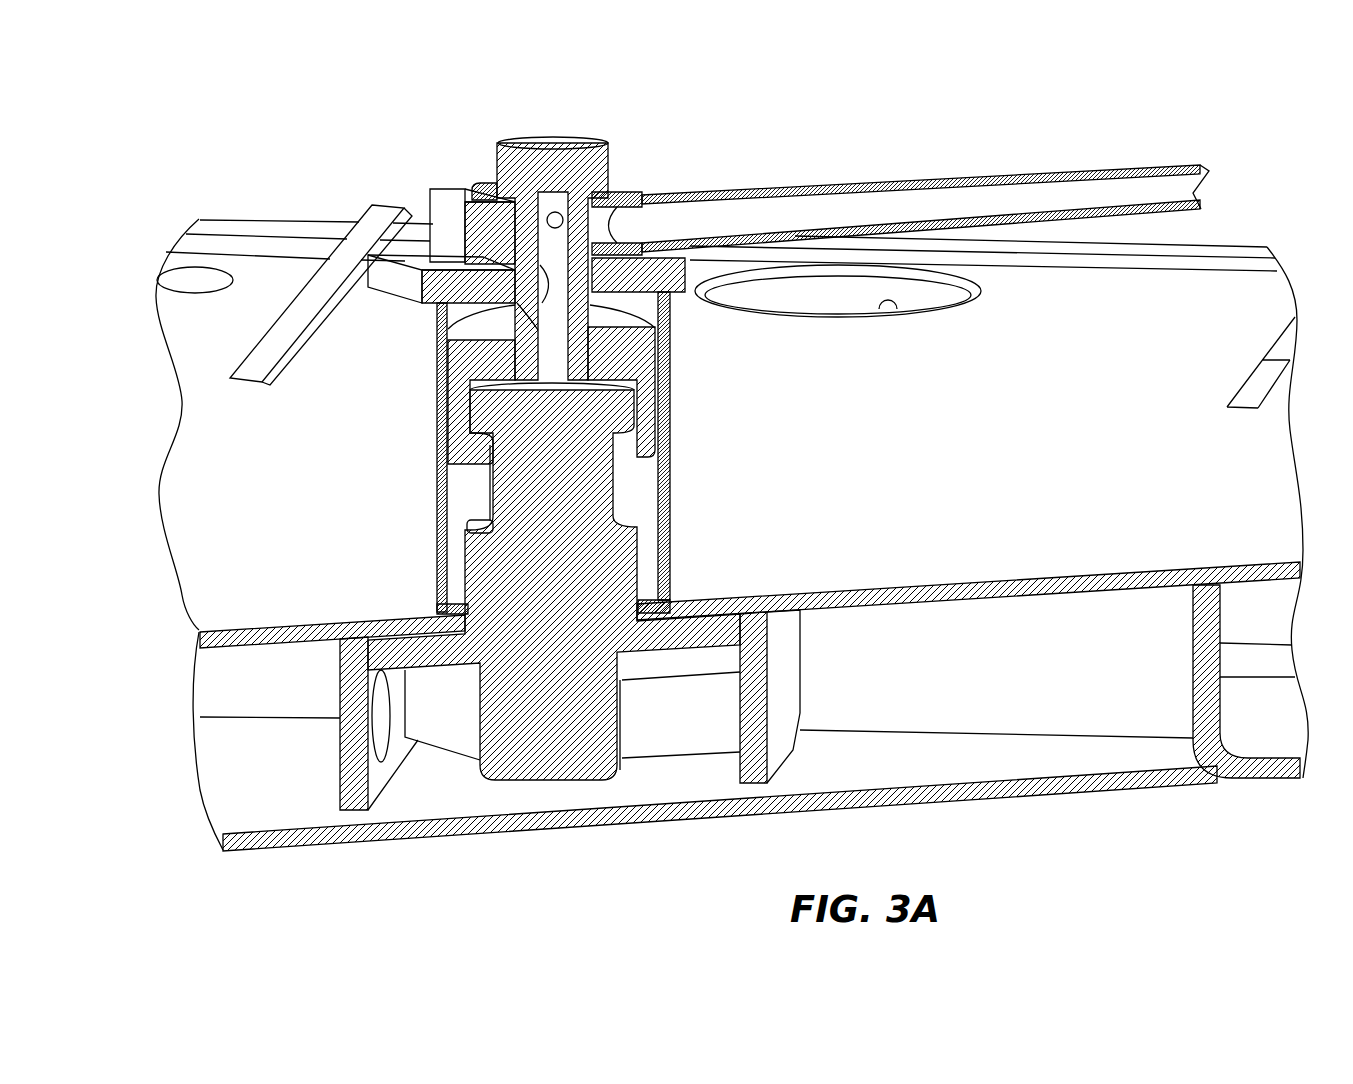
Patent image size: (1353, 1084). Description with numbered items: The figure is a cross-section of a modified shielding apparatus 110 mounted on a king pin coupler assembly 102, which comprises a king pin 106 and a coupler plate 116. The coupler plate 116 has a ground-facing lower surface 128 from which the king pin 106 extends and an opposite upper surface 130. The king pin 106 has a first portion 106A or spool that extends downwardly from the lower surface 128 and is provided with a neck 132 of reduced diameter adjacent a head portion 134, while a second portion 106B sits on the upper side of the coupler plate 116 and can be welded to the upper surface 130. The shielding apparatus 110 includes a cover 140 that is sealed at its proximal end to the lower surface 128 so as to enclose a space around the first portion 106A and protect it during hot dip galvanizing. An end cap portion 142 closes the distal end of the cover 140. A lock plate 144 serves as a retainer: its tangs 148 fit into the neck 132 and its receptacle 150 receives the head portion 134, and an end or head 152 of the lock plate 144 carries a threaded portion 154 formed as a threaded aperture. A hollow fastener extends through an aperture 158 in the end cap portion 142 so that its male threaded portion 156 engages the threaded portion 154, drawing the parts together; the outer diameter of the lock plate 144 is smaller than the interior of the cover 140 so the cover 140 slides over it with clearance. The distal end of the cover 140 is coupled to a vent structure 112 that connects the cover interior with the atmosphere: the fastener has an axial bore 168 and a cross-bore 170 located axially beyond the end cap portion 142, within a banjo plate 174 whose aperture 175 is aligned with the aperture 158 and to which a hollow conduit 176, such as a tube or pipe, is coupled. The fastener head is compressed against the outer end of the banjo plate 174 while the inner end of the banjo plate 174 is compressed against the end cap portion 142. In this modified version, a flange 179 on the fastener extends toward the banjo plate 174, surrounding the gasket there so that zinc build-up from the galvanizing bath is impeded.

The king pin coupler assembly 102 is at (236, 150).
The king pin 106 is at (588, 642).
The first portion of the king pin 106A is at (628, 548).
The second portion of the king pin 106B is at (605, 718).
The shielding apparatus 110 is at (825, 438).
The vent structure 112 is at (900, 165).
The coupler plate 116 is at (695, 620).
The ground-facing surface 128 is at (971, 475).
The upper surface 130 is at (978, 603).
The neck 132 is at (405, 458).
The head portion 134 is at (496, 412).
The cover 140 is at (441, 567).
The end cap portion 142 is at (470, 290).
The lock plate 144 is at (640, 405).
The tangs 148 is at (692, 452).
The receptacle 150 is at (417, 399).
The head of the lock plate 152 is at (690, 392).
The threaded portion of the lock plate 154 is at (655, 335).
The threaded portion of the fastener 156 is at (463, 353).
The aperture in the end cap portion 158 is at (672, 298).
The axial bore 168 is at (510, 242).
The cross-bore 170 is at (505, 226).
The banjo plate 174 is at (436, 195).
The aperture in the banjo plate 175 is at (500, 143).
The hollow conduit 176 is at (628, 182).
The flange 179 is at (478, 182).